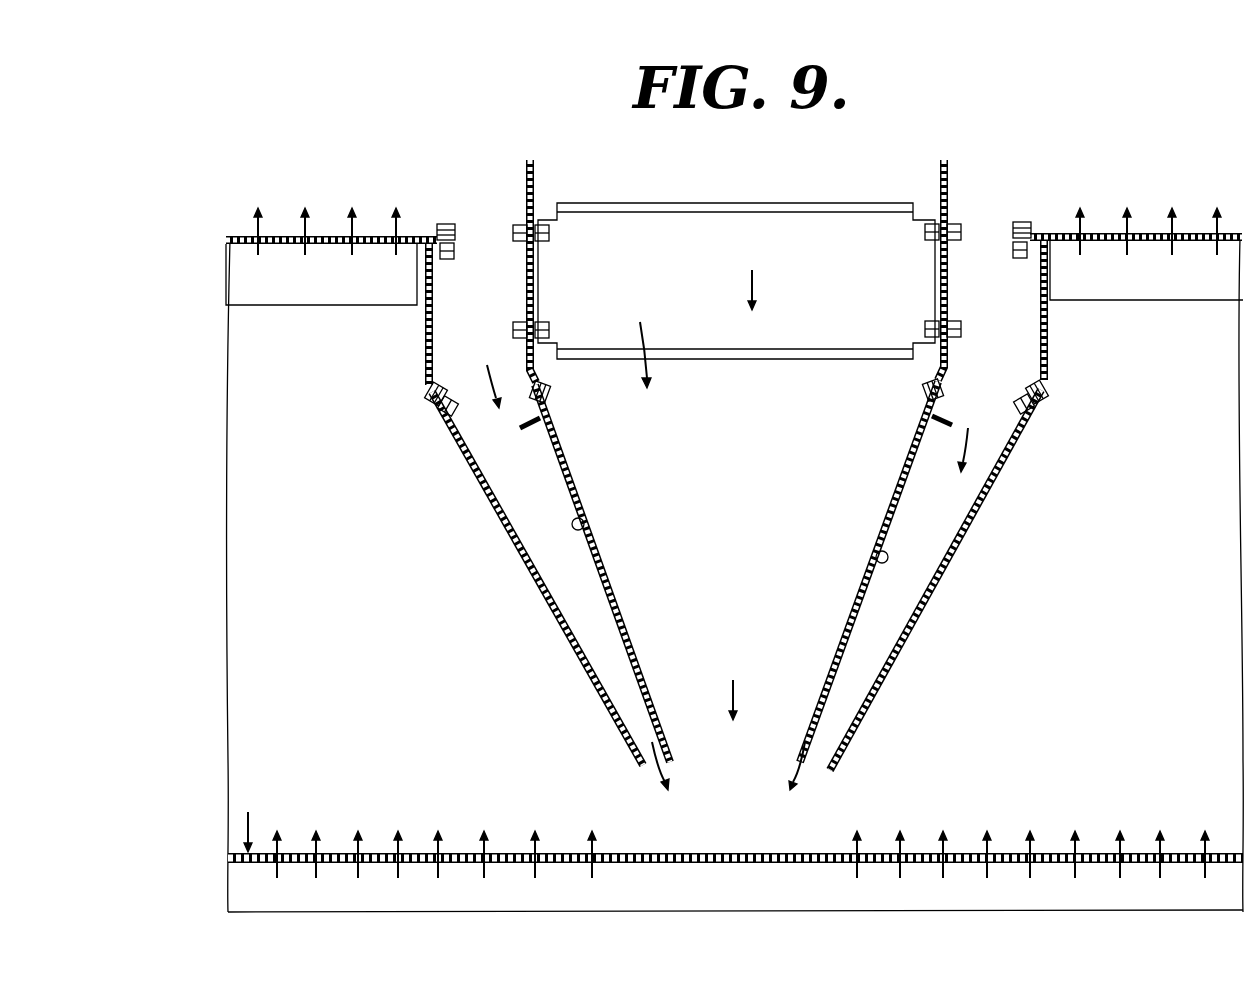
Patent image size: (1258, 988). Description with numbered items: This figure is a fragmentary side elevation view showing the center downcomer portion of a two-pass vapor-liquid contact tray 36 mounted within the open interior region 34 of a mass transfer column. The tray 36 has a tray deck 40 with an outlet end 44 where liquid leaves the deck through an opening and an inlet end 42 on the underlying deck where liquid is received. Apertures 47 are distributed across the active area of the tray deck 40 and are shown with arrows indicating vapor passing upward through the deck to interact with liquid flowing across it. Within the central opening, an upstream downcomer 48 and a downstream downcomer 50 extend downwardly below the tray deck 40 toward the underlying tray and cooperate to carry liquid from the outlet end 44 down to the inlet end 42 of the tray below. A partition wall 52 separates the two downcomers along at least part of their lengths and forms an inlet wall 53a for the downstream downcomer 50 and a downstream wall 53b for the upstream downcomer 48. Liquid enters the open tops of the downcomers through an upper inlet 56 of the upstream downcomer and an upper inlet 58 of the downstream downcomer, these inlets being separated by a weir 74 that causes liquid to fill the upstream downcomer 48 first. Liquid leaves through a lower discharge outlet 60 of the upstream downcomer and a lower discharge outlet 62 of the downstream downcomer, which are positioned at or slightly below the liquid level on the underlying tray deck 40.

The interior region 34 is at (397, 606).
The vapor-liquid contact tray 36 is at (226, 268).
The tray deck 40 is at (284, 852).
The inlet end 42 is at (700, 852).
The outlet end 44 is at (414, 240).
The apertures 47 is at (350, 246).
The upstream downcomer 48 is at (500, 482).
The downstream downcomer 50 is at (756, 464).
The partition wall 52 is at (566, 455).
The inlet wall 53a is at (592, 497).
The downstream wall 53b is at (585, 526).
The upper inlet 56 is at (472, 236).
The upper inlet 58 is at (748, 176).
The lower discharge outlet 60 is at (645, 778).
The lower discharge outlet 62 is at (735, 755).
The weir 74 is at (526, 165).